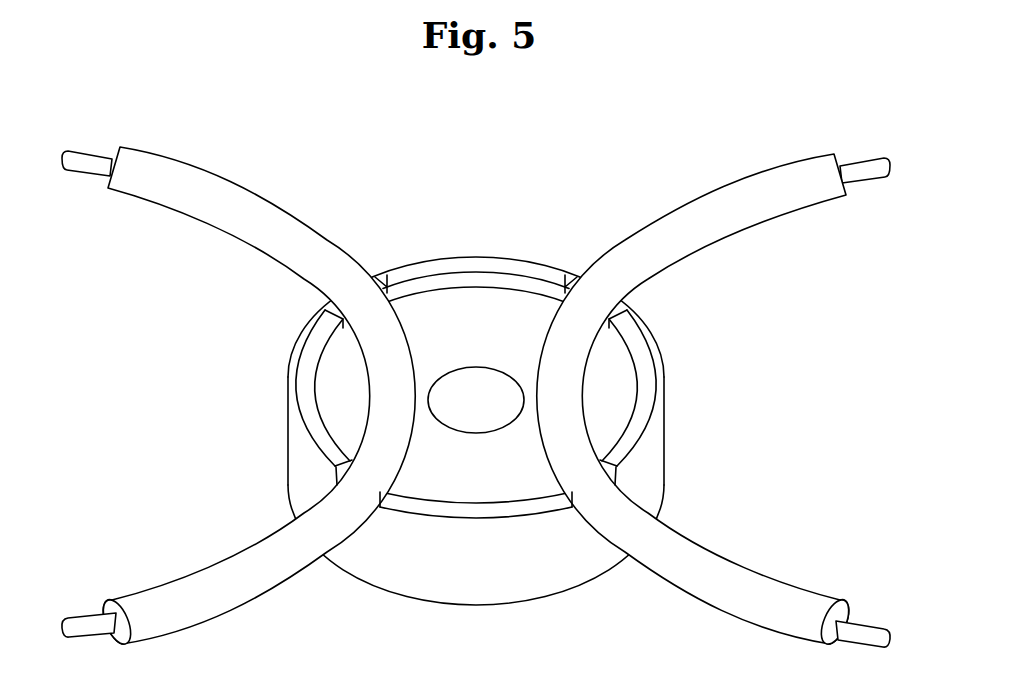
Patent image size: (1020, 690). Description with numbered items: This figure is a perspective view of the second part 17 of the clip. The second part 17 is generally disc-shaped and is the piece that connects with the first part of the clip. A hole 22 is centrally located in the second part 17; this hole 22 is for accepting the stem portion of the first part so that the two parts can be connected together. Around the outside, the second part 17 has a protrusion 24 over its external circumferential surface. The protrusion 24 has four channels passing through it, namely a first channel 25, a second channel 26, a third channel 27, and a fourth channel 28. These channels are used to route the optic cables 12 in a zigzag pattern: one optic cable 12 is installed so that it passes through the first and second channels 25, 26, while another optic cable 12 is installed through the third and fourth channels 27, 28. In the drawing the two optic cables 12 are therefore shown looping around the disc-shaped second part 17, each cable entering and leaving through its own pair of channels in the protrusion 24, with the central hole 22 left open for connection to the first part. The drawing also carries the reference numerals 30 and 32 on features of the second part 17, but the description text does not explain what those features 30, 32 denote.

The optic cable 12 is at (197, 574).
The second part 17 is at (694, 420).
The hole 22 is at (477, 366).
The protrusion 24 is at (666, 374).
The first channel 25 is at (576, 514).
The second channel 26 is at (574, 275).
The third channel 27 is at (379, 275).
The fourth channel 28 is at (380, 512).
The guide ring 30 is at (594, 311).
The guide ring 32 is at (386, 383).